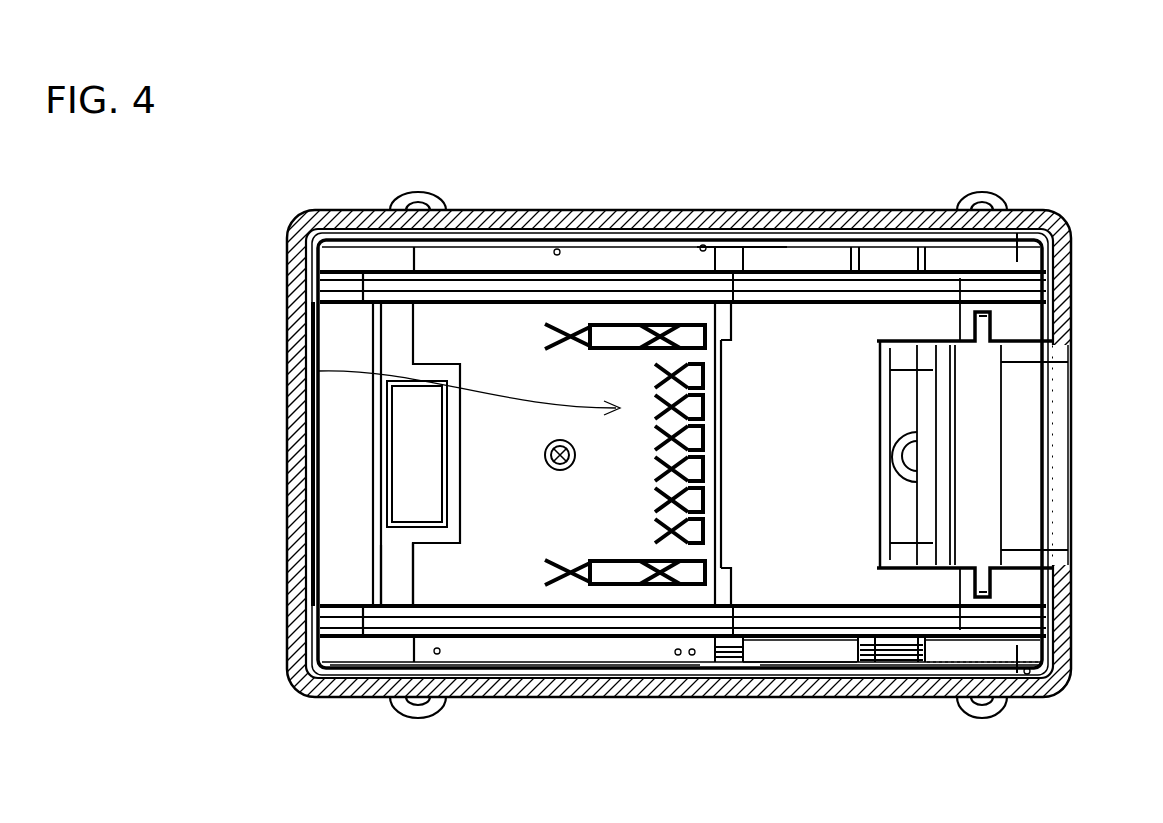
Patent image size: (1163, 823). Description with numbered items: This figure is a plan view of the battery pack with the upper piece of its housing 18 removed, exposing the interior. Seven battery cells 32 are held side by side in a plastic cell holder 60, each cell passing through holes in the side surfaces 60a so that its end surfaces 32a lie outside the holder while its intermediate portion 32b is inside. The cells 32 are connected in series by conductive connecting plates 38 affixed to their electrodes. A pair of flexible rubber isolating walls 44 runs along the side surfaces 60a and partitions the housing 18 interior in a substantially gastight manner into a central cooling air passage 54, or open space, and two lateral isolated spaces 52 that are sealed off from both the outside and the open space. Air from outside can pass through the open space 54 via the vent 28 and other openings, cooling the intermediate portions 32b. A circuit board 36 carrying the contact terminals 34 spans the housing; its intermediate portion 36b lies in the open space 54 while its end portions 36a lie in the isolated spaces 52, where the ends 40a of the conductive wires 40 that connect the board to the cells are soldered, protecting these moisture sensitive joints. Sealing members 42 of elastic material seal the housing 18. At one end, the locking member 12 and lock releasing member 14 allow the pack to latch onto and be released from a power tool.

The locking member 12 is at (977, 435).
The lock releasing member 14 is at (1057, 508).
The housing 18 is at (1067, 223).
The vent 28 is at (394, 452).
The battery cell 32 is at (800, 653).
The end surface 32a is at (1027, 675).
The intermediate portion 32b is at (313, 495).
The contact terminal 34 is at (318, 371).
The circuit board 36 is at (467, 320).
The end portion 36a is at (420, 262).
The intermediate portion 36b is at (437, 573).
The connecting plate 38 is at (393, 650).
The conductive wire 40 is at (733, 233).
The end of conductive wire 40a is at (557, 249).
The sealing member 42 is at (1017, 233).
The isolating wall 44 is at (1053, 282).
The isolated space 52 is at (313, 253).
The cooling air passage 54 is at (313, 338).
The cell holder 60 is at (793, 347).
The side surface 60a is at (847, 297).